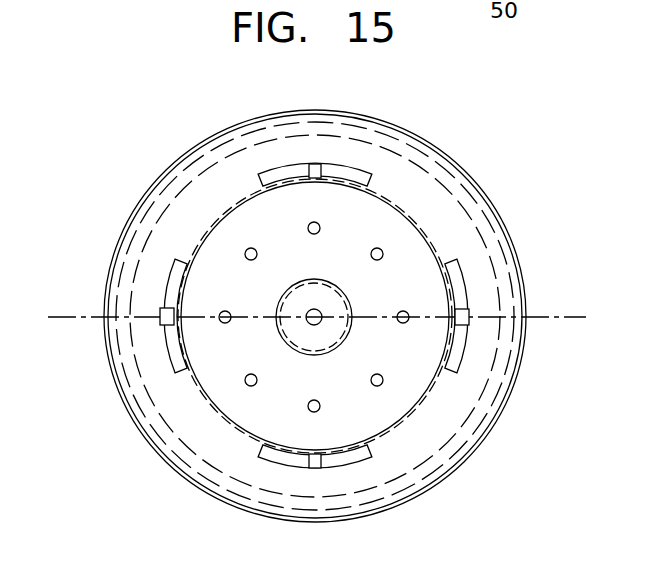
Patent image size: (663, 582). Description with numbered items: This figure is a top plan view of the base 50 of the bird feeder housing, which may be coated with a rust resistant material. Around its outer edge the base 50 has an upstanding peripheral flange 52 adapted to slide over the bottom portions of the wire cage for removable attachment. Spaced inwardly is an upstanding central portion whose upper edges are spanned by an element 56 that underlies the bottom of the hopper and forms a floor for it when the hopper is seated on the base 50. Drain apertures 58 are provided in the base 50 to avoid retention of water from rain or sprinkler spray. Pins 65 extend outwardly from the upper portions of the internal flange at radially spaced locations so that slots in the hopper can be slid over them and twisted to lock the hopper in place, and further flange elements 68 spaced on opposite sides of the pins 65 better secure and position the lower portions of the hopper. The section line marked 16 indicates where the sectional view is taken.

The base 50 is at (408, 118).
The peripheral flange 52 is at (488, 192).
The element 56 is at (417, 384).
The drain apertures 58 is at (308, 222).
The pins 65 is at (315, 468).
The flange elements 68 is at (340, 165).
The section line 16- 16 is at (57, 322).